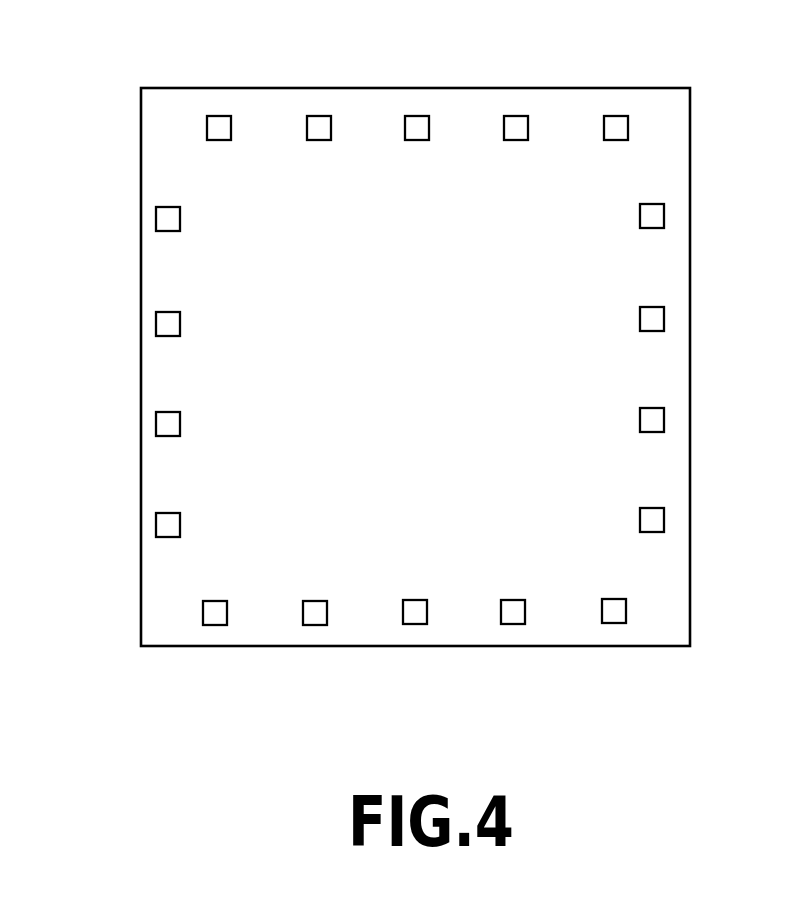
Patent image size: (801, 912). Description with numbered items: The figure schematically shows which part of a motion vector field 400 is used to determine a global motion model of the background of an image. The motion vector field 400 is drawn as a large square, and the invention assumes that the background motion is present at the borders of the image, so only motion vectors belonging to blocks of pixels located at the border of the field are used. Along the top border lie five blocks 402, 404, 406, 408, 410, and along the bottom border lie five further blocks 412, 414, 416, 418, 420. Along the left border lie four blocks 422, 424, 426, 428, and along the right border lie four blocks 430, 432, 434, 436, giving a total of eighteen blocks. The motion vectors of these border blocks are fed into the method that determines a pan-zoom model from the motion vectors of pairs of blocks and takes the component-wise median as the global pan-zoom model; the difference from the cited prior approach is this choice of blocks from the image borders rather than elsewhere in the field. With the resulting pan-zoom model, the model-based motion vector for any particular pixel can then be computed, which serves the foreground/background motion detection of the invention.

The motion vector field 400 is at (672, 112).
The block 402 is at (220, 121).
The block 404 is at (318, 122).
The block 406 is at (414, 120).
The block 408 is at (519, 122).
The block 410 is at (620, 121).
The block 412 is at (213, 620).
The block 414 is at (312, 610).
The block 416 is at (413, 620).
The block 418 is at (515, 620).
The block 420 is at (613, 617).
The block 422 is at (168, 223).
The block 424 is at (162, 325).
The block 426 is at (160, 425).
The block 428 is at (160, 528).
The block 430 is at (662, 213).
The block 432 is at (660, 319).
The block 434 is at (660, 424).
The block 436 is at (660, 519).